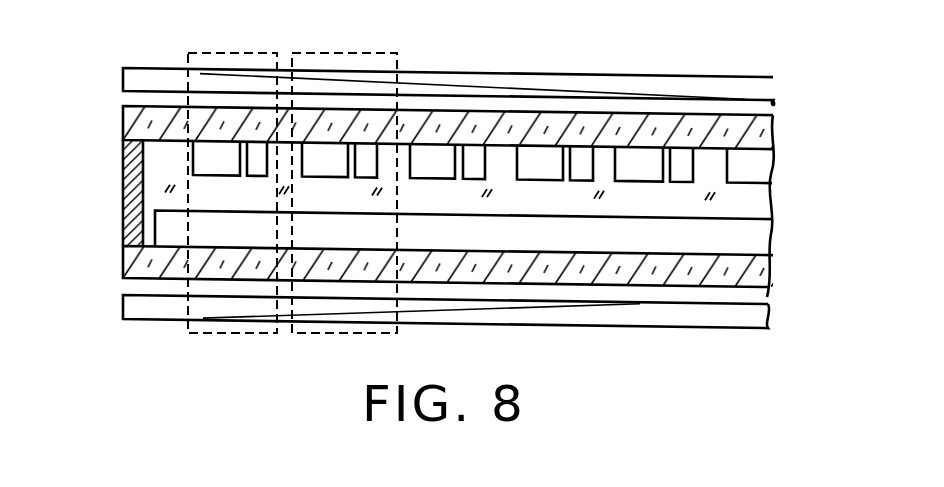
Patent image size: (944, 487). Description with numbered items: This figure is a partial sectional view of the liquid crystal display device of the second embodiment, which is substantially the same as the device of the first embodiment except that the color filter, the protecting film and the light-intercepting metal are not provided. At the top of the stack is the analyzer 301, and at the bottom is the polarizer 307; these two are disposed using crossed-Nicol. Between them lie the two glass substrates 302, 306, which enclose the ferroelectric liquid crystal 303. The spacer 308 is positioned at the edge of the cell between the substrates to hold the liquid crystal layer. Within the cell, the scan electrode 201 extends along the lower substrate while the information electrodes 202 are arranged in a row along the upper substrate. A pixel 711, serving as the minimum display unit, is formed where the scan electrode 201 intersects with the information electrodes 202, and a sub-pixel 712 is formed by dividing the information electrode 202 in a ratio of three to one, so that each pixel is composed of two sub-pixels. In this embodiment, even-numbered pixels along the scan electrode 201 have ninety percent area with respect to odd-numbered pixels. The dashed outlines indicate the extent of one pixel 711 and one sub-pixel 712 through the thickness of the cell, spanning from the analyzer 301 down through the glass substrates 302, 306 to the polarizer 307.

The analyzer 301 is at (706, 88).
The glass substrate 302 is at (757, 131).
The ferroelectric liquid crystal 303 is at (753, 195).
The scan electrode 201 is at (762, 237).
The information electrode 202 is at (440, 152).
The glass substrate 306 is at (757, 275).
The polarizer 307 is at (770, 312).
The spacer 308 is at (123, 211).
The pixel 711 is at (352, 52).
The sub-pixel 712 is at (233, 52).